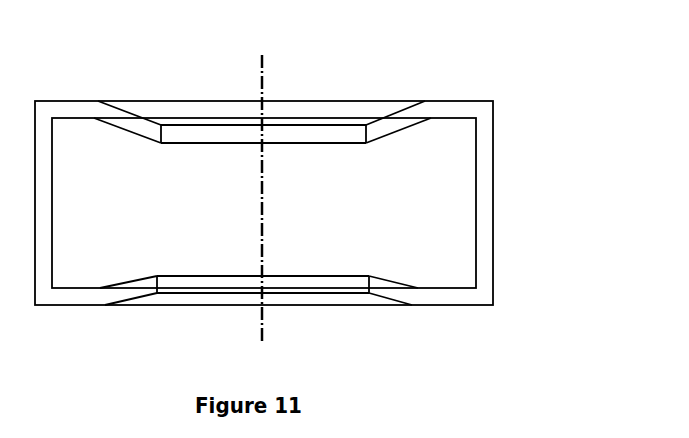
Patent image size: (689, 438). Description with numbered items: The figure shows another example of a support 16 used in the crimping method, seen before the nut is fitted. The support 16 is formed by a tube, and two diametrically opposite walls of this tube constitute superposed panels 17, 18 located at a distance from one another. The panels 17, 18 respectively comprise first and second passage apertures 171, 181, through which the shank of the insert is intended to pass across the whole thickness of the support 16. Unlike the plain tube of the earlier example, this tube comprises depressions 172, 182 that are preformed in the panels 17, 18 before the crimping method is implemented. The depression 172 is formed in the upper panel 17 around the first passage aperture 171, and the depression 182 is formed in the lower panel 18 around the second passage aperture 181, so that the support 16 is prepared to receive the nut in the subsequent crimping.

The support 16 is at (266, 200).
The panel 17 is at (76, 108).
The first passage aperture 171 is at (328, 131).
The depression 172 is at (137, 128).
The panel 18 is at (448, 297).
The second passage aperture 181 is at (326, 290).
The depression 182 is at (133, 285).